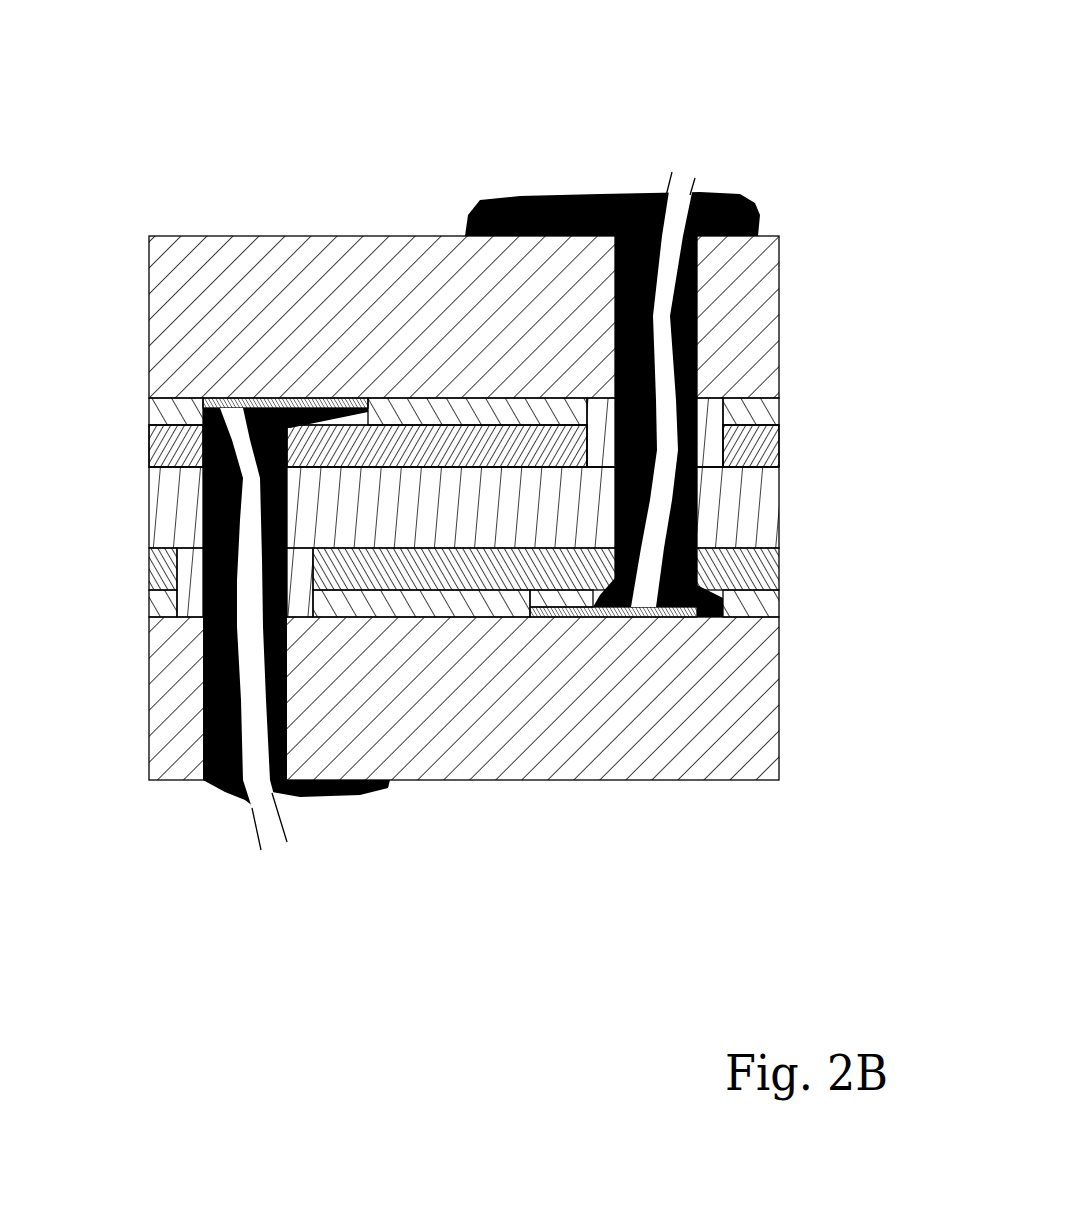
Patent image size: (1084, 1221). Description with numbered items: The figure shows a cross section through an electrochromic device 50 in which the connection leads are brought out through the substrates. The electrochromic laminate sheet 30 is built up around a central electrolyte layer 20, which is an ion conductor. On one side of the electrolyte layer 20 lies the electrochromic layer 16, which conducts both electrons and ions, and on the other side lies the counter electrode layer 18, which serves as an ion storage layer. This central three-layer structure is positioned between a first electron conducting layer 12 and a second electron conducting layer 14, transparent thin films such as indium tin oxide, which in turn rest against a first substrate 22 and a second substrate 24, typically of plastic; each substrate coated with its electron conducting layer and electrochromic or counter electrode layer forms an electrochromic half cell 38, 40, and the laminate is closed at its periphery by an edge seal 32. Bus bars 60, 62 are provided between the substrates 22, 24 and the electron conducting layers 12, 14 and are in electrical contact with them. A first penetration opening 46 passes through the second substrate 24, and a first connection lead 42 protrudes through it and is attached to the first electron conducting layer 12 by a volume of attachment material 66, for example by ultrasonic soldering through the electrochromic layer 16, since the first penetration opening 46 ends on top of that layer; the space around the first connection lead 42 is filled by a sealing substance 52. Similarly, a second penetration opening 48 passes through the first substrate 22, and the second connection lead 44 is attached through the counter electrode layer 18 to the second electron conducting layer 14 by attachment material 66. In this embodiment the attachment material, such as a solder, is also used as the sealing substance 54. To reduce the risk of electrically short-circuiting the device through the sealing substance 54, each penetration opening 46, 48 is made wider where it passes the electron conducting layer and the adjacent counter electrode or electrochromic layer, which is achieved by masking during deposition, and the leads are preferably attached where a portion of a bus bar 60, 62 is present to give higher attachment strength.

The first electron conducting layer 12 is at (779, 425).
The second electron conducting layer 14 is at (163, 620).
The electrochromic layer 16 is at (157, 468).
The counter electrode layer 18 is at (165, 572).
The electrolyte layer 20 is at (765, 508).
The first substrate 22 is at (440, 238).
The second substrate 24 is at (457, 772).
The electrochromic laminate sheet 30 is at (149, 780).
The edge seal 32 is at (779, 355).
The electrochromic half cell 38 is at (779, 236).
The electrochromic half cell 40 is at (779, 537).
The first connection lead 42 is at (260, 833).
The second connection lead 44 is at (667, 182).
The first penetration opening 46 is at (378, 773).
The second penetration opening 48 is at (740, 248).
The electrochromic device 50 is at (560, 83).
The sealing substance 52 is at (210, 787).
The sealing substance 54 is at (560, 193).
The bus bar 60 is at (255, 398).
The bus bar 62 is at (617, 617).
The attachment material 66 is at (193, 422).